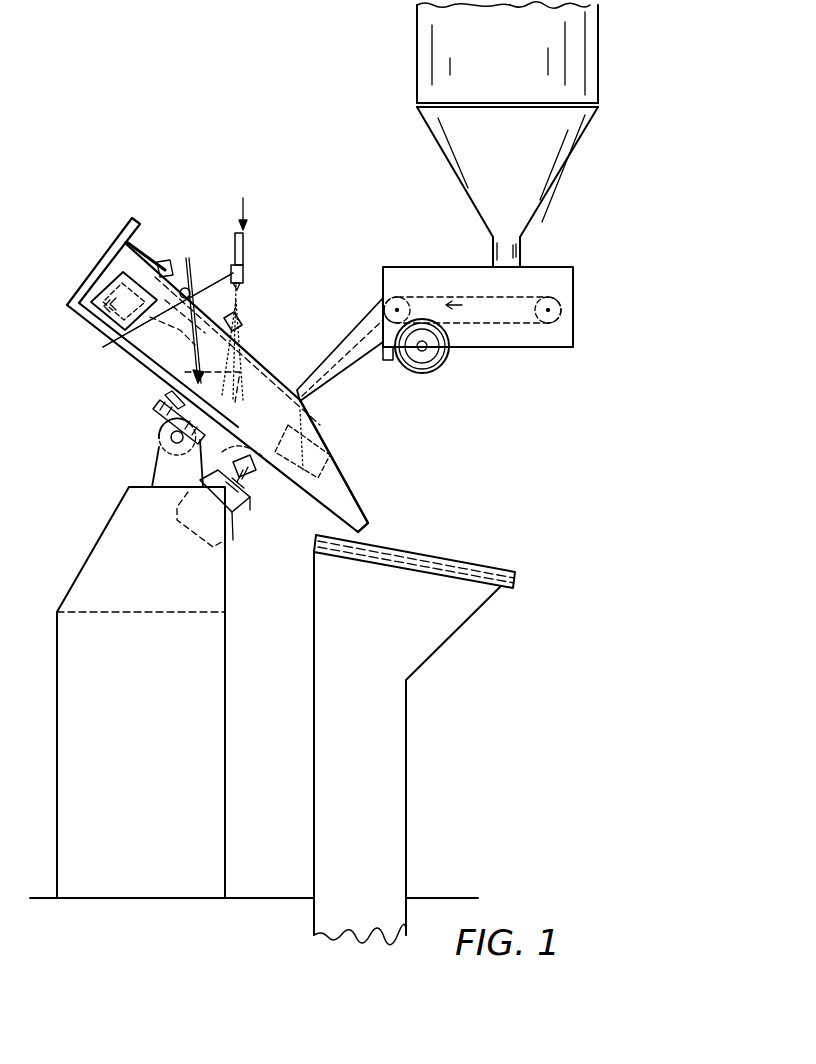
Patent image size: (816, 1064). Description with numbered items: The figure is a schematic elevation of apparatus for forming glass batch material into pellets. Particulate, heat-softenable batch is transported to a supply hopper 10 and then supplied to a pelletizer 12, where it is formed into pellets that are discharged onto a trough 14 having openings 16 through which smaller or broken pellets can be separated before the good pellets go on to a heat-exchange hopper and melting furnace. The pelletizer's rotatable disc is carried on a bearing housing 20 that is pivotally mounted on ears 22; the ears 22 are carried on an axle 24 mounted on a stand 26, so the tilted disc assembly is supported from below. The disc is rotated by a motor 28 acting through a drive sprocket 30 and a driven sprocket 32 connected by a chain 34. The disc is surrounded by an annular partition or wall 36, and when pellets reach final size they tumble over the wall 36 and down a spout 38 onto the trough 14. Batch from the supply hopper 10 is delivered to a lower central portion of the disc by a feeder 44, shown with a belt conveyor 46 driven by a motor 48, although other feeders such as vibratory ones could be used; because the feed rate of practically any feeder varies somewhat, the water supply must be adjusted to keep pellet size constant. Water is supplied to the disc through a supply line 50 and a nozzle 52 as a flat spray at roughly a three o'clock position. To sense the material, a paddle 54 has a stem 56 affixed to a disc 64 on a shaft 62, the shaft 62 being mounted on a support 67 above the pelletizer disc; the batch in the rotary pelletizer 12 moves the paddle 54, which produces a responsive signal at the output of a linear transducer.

The supply hopper 10 is at (508, 68).
The pelletizer 12 is at (188, 209).
The trough 14 is at (381, 534).
The openings 16 is at (478, 572).
The bearing housing 20 is at (158, 402).
The ears 22 is at (156, 458).
The axle 24 is at (170, 437).
The stand 26 is at (107, 526).
The motor 28 is at (238, 520).
The drive sprocket 30 is at (250, 478).
The driven sprocket 32 is at (163, 401).
The chain 34 is at (255, 478).
The annular partition or wall 36 is at (243, 380).
The spout 38 is at (347, 474).
The feeder 44 is at (371, 258).
The conveyor belt 46 is at (455, 297).
The motor 48 is at (447, 360).
The supply line 50 is at (248, 246).
The nozzle 52 is at (243, 273).
The paddle 54 is at (143, 369).
The stem 56 is at (192, 290).
The shaft 62 is at (110, 340).
The disc 64 is at (168, 285).
The support 67 is at (140, 240).